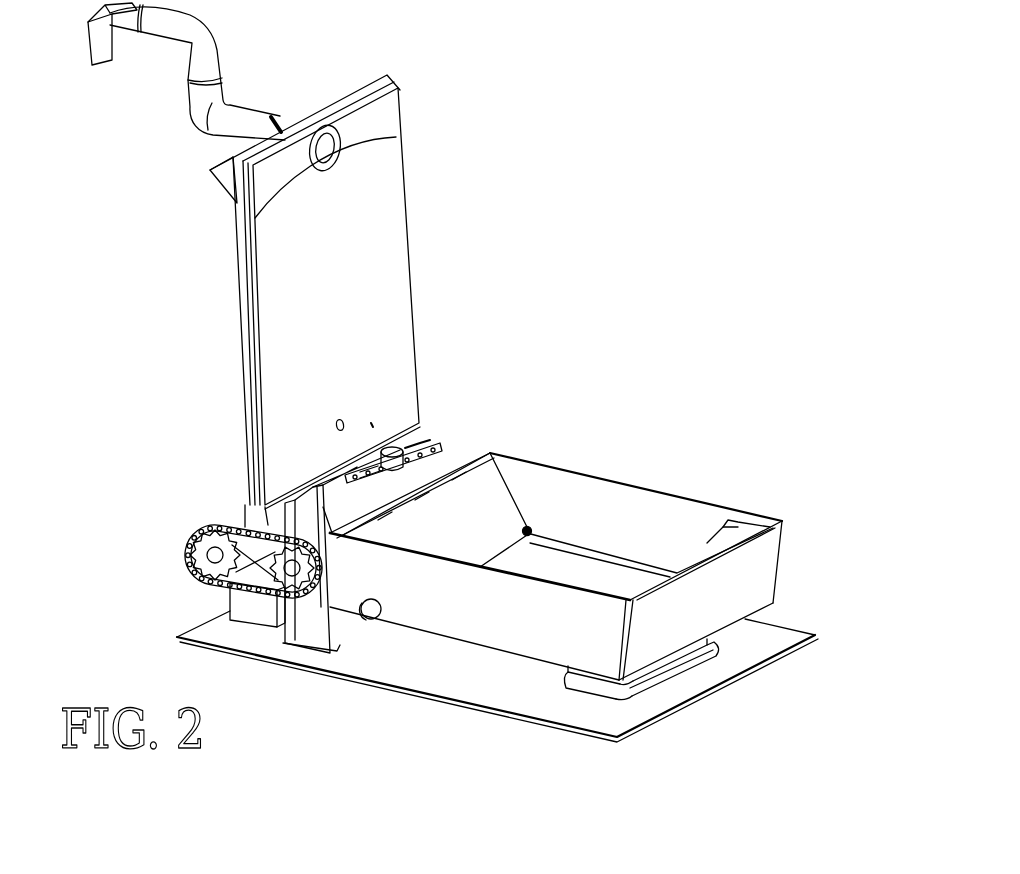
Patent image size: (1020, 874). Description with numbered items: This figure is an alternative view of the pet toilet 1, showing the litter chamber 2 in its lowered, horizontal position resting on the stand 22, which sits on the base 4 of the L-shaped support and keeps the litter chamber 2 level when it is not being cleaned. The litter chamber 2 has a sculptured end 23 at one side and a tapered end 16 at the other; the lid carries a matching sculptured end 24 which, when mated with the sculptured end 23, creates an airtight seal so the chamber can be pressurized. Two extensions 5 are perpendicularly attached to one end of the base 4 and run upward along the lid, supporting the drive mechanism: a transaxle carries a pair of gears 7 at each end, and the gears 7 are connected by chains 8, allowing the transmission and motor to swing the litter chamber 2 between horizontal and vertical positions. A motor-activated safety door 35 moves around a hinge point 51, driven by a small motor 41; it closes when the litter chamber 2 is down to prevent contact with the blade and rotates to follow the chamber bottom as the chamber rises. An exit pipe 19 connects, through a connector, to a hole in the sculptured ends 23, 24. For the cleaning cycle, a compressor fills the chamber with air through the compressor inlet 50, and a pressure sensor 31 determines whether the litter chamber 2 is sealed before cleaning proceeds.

The pet toilet 1 is at (610, 167).
The litter chamber 2 is at (635, 543).
The base 4 is at (785, 617).
The extensions 5 is at (240, 473).
The gears 7 is at (260, 563).
The chains 8 is at (193, 560).
The tapered end 16 is at (433, 457).
The exit pipe 19 is at (196, 132).
The stand 22 is at (680, 680).
The sculptured end 23 is at (713, 530).
The sculptured end 24 is at (405, 122).
The pressure sensor 31 is at (340, 418).
The safety door 35 is at (497, 503).
The small motor 41 is at (387, 613).
The compressor inlet 50 is at (370, 422).
The hinge point 51 is at (548, 523).